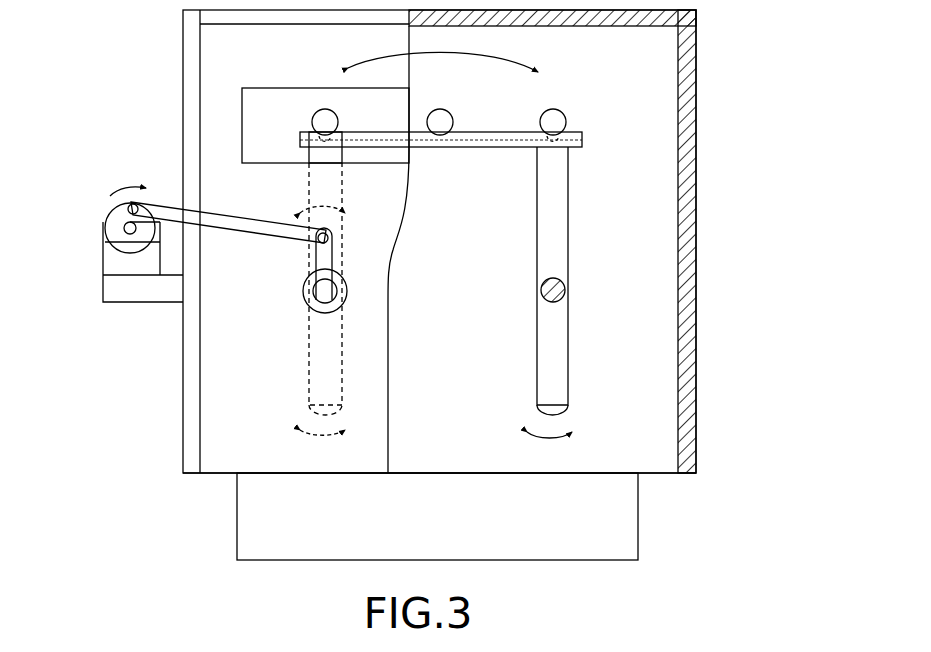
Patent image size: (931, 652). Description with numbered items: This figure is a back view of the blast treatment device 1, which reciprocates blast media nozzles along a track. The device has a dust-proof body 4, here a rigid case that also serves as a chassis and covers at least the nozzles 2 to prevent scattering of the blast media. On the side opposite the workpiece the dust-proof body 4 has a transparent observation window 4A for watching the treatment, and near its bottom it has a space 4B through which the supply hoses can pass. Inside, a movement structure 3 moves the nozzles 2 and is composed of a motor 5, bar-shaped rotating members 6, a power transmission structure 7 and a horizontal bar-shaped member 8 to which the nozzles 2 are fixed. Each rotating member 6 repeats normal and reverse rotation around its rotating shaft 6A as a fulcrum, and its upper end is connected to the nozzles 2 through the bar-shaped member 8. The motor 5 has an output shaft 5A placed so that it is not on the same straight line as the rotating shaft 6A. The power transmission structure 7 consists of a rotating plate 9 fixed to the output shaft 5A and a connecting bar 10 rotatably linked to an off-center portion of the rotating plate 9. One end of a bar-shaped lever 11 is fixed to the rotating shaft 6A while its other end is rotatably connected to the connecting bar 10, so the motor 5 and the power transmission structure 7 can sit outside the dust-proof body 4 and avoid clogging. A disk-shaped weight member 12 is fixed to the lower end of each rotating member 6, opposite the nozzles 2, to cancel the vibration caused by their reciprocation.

The blast treatment device 1 is at (126, 58).
The nozzle 2 is at (556, 110).
The movement structure 3 is at (545, 281).
The dust-proof body 4 is at (697, 262).
The transparent observation window 4A is at (269, 103).
The space 4B is at (655, 475).
The motor 5 is at (103, 258).
The output shaft 5A is at (104, 231).
The rotating member 6 is at (545, 281).
The rotating shaft 6A is at (568, 288).
The power transmission structure 7 is at (187, 276).
The bar-shaped member 8 is at (487, 148).
The rotating plate 9 is at (160, 236).
The connecting bar 10 is at (236, 230).
The lever 11 is at (309, 270).
The weight member 12 is at (537, 407).